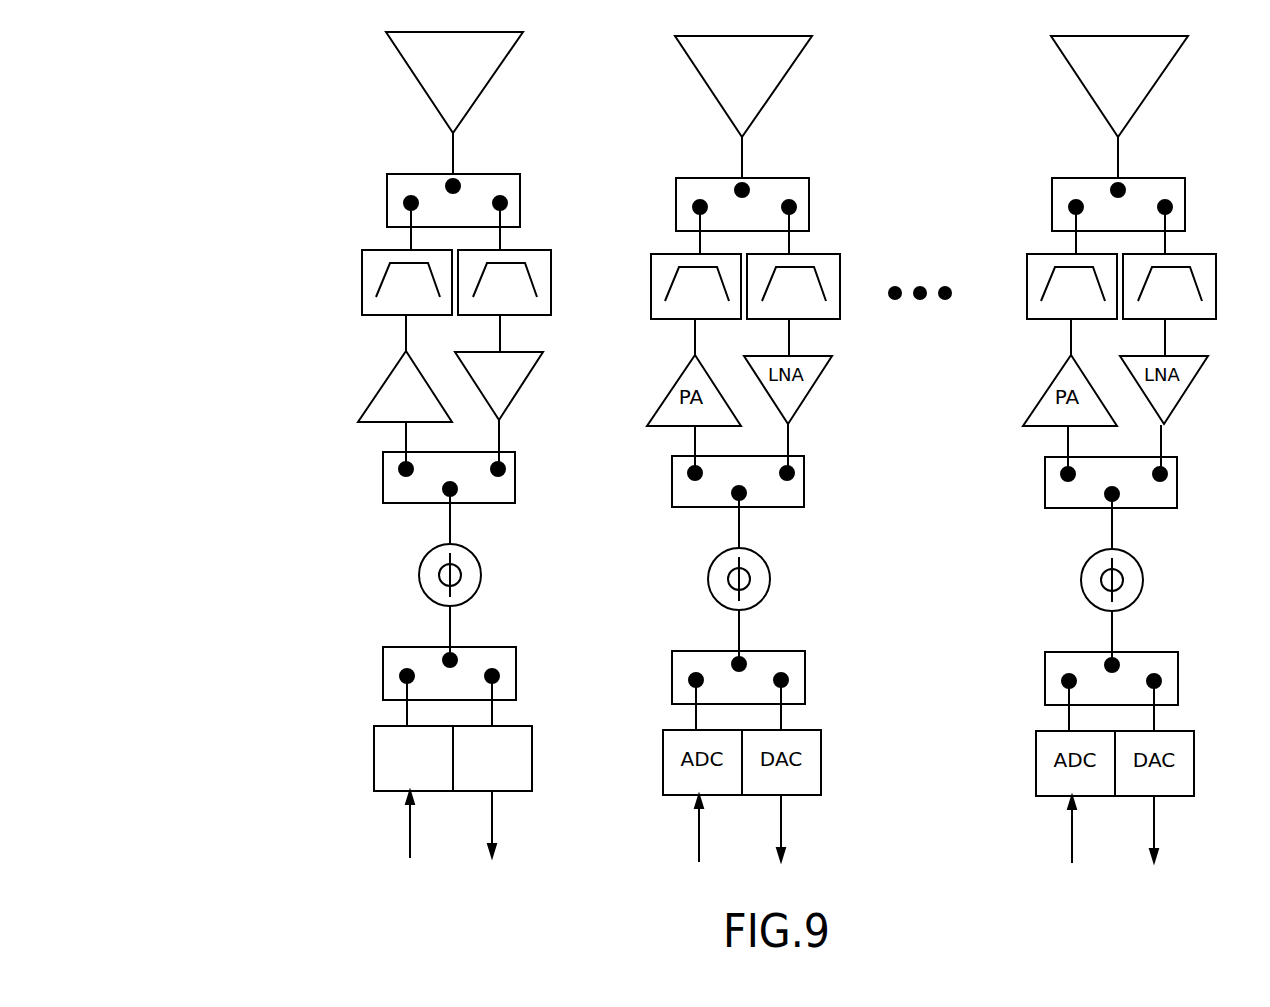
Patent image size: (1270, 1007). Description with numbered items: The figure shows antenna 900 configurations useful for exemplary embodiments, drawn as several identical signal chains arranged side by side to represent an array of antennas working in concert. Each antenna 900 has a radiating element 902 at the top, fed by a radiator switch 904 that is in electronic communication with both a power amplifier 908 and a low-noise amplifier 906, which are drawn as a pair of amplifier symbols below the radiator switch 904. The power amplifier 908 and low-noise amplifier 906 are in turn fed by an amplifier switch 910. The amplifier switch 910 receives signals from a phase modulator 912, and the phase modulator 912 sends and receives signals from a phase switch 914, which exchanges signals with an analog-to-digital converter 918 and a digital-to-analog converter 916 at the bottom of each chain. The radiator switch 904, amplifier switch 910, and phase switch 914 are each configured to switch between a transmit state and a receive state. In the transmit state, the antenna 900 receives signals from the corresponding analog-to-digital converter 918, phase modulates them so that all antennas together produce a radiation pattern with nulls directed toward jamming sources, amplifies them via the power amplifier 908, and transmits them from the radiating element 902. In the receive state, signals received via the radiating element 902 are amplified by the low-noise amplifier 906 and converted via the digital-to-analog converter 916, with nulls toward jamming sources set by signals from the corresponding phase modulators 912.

The antenna 900 is at (222, 78).
The radiating element 902 is at (433, 107).
The radiator switch 904 is at (387, 198).
The low-noise amplifier 906 is at (513, 398).
The power amplifier 908 is at (375, 400).
The amplifier switch 910 is at (383, 482).
The phase modulator 912 is at (418, 577).
The phase switch 914 is at (383, 672).
The digital-to-analog converter 916 is at (532, 762).
The analog-to-digital converter 918 is at (374, 755).